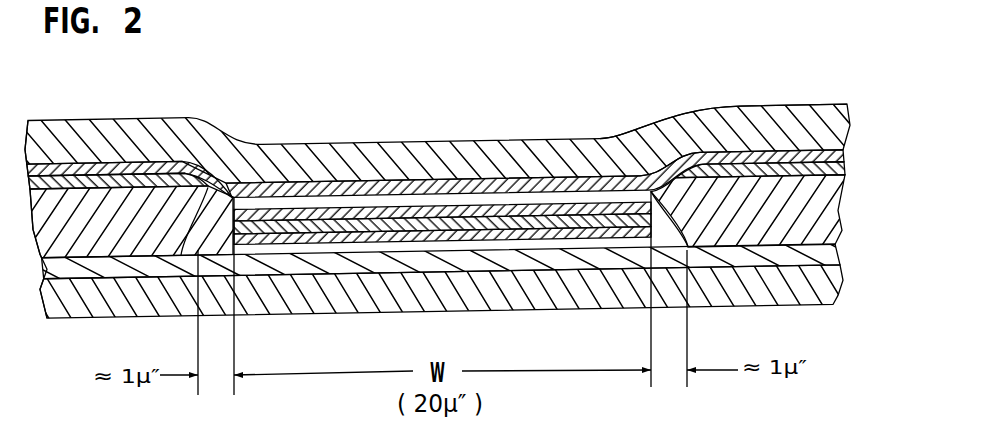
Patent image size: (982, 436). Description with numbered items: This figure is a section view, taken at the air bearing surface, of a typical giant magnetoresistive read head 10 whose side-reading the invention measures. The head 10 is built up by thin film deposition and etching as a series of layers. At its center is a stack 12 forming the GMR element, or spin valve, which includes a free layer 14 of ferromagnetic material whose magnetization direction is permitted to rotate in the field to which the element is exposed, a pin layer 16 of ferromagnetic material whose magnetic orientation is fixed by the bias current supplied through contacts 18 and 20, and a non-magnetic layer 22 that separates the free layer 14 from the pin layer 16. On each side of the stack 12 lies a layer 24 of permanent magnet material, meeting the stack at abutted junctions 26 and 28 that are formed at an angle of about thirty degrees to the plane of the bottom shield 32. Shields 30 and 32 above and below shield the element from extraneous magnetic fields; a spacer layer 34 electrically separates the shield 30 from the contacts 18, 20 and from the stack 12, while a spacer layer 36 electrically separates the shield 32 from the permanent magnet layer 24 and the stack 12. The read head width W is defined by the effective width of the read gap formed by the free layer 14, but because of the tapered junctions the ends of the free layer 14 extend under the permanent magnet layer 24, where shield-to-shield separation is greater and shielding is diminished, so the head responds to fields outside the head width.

The giant magnetoresistive read head 10 is at (234, 86).
The stack 12 is at (362, 195).
The free layer 14 is at (428, 240).
The pin layer 16 is at (527, 220).
The contact 18 is at (28, 178).
The contact 20 is at (845, 168).
The non-magnetic layer 22 is at (465, 232).
The permanent magnet layer 24 is at (847, 223).
The abutted junction 26 is at (187, 257).
The abutted junction 28 is at (682, 252).
The shield 30 is at (753, 105).
The bottom shield 32 is at (822, 305).
The spacer layer 34 is at (843, 157).
The spacer layer 36 is at (833, 255).